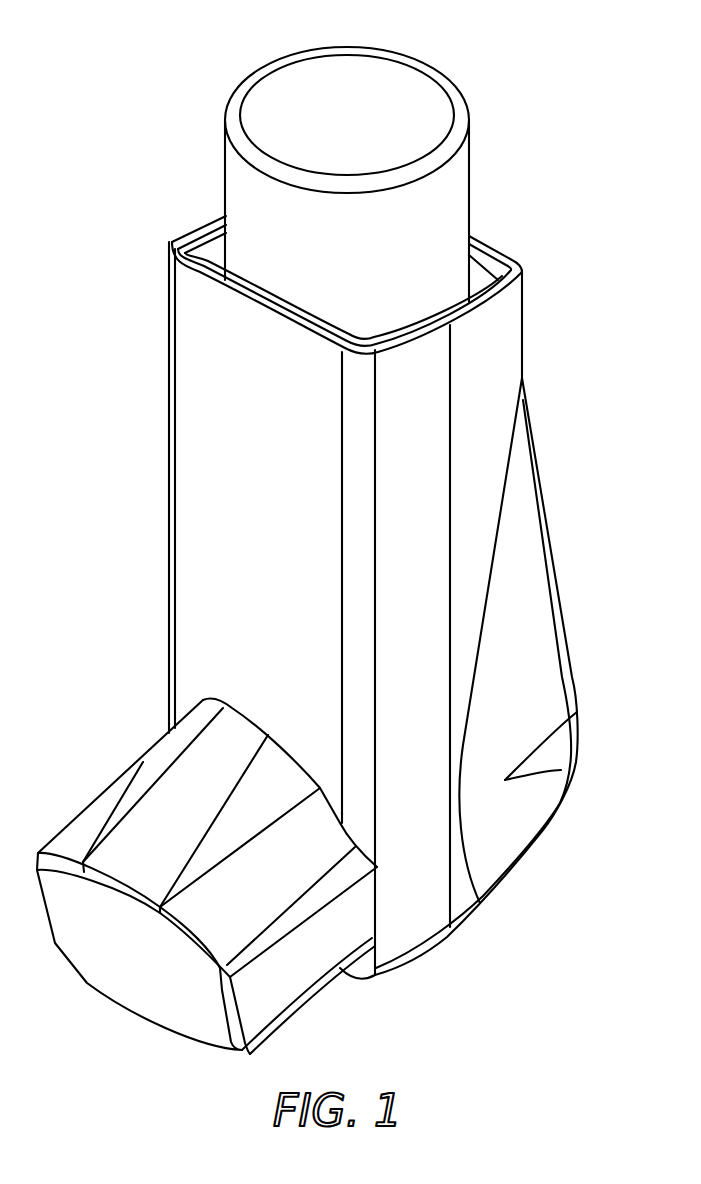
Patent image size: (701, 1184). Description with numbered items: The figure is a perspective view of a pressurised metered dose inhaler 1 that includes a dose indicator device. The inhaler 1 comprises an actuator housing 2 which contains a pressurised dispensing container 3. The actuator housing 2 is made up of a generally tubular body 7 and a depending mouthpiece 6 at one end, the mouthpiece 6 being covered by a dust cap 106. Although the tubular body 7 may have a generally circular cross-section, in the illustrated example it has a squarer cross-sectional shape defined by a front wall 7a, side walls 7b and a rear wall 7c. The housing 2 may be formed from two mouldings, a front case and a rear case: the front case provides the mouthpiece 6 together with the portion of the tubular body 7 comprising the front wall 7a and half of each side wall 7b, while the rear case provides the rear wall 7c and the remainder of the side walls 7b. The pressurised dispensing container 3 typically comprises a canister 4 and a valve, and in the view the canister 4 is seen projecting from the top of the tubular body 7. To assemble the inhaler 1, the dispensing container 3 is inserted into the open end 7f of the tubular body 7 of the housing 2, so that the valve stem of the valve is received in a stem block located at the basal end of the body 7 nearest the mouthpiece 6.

The pressurised metered dose inhaler 1 is at (582, 472).
The actuator housing 2 is at (139, 462).
The pressurised dispensing container 3 is at (366, 156).
The canister 4 is at (299, 73).
The mouthpiece 6 is at (321, 1005).
The tubular body 7 is at (183, 566).
The front wall 7a is at (183, 318).
The side walls 7b is at (510, 323).
The rear wall 7c is at (485, 250).
The open end 7f is at (203, 243).
The dust cap 106 is at (117, 983).